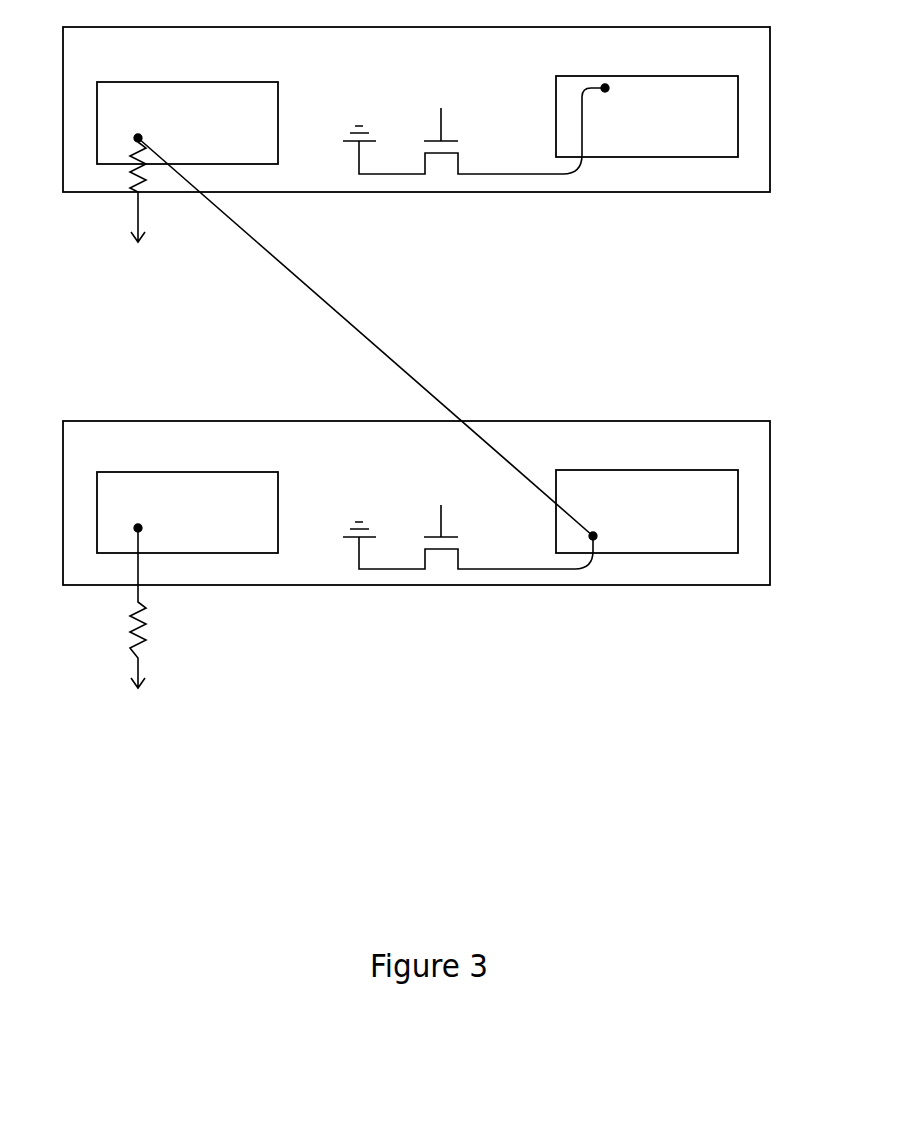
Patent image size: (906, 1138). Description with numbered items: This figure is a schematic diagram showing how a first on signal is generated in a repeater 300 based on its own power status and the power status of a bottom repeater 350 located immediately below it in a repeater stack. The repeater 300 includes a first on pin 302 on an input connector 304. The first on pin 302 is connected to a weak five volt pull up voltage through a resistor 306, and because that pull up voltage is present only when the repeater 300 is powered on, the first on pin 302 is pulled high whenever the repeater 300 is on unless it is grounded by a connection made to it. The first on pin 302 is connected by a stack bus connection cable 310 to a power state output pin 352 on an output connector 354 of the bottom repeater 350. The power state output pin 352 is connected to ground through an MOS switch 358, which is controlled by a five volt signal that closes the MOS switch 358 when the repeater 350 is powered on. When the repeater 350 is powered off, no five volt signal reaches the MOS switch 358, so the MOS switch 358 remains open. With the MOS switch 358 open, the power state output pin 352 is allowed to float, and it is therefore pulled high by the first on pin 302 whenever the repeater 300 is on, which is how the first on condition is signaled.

The repeater 300 is at (431, 152).
The first on pin 302 is at (138, 138).
The input connector 304 is at (233, 82).
The resistor 306 is at (138, 192).
The stack bus connection cable 310 is at (312, 288).
The bottom repeater 350 is at (454, 553).
The power state output pin 352 is at (600, 538).
The output connector 354 is at (722, 470).
The MOS switch 358 is at (408, 569).